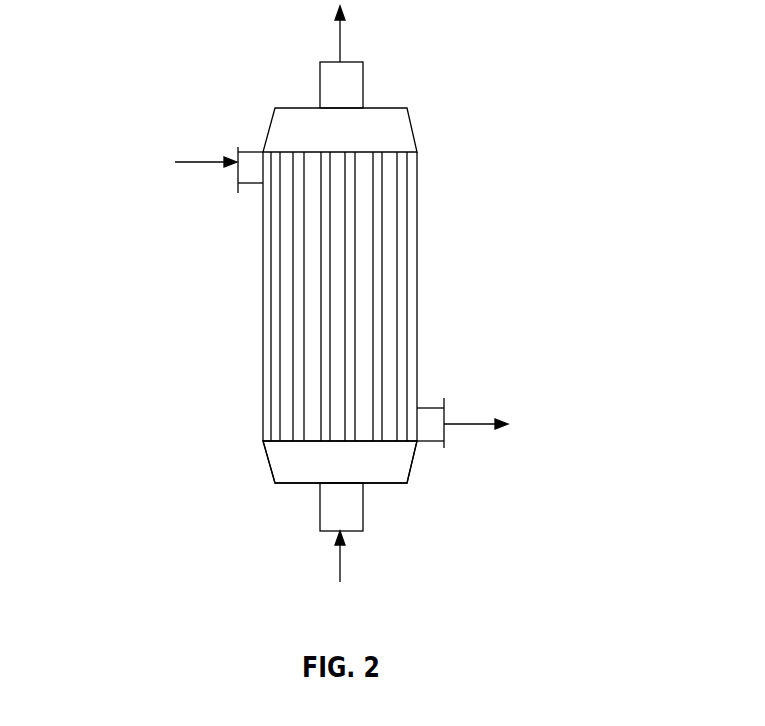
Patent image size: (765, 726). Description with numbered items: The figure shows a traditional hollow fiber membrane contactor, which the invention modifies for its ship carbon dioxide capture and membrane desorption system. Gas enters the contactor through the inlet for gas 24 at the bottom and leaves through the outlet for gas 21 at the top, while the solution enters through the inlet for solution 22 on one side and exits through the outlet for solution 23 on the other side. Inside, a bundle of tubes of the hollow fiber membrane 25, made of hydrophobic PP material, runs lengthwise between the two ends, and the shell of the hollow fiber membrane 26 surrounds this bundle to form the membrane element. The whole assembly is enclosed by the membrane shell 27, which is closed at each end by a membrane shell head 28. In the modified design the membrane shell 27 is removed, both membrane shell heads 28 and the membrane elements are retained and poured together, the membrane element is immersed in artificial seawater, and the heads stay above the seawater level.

The outlet for gas 21 is at (463, 57).
The inlet for solution 22 is at (166, 208).
The outlet for solution 23 is at (512, 385).
The inlet for gas 24 is at (463, 519).
The tube of the hollow fiber membrane 25 is at (167, 296).
The shell of the hollow fiber membrane 26 is at (439, 291).
The membrane shell 27 is at (512, 296).
The membrane shell head 28 is at (243, 500).